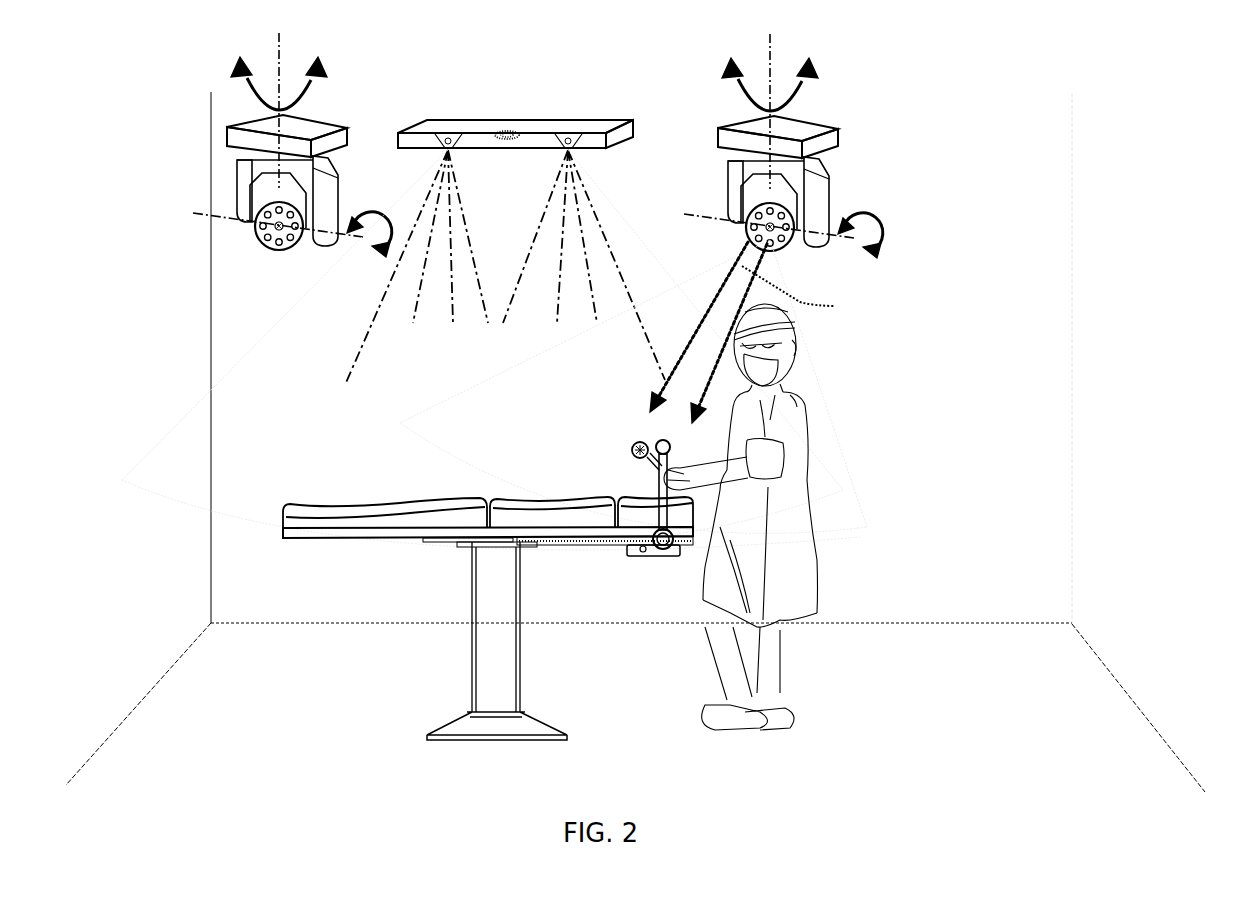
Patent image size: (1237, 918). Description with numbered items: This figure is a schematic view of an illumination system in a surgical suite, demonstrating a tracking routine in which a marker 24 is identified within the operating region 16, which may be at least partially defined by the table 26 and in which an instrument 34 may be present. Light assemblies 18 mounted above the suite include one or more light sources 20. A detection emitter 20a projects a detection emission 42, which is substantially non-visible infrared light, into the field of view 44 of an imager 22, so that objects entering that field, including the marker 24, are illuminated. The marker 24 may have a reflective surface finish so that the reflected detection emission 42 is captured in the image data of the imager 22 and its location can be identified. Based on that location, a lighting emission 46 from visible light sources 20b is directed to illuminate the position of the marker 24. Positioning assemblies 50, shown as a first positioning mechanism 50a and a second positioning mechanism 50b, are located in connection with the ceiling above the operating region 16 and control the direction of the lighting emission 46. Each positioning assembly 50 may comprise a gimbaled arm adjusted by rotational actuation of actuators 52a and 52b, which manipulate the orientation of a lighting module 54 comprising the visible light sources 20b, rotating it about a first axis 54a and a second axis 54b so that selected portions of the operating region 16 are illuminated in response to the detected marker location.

The operating region 16 is at (355, 447).
The light assembly 18 is at (276, 257).
The light source 20 is at (641, 134).
The detection emitter 20a is at (450, 136).
The visible light source 20b is at (278, 238).
The imager 22 is at (508, 130).
The marker 24 is at (635, 445).
The table 26 is at (430, 540).
The instrument 34 is at (648, 463).
The detection emission 42 is at (525, 257).
The field of view 44 is at (198, 405).
The lighting emission 46 is at (753, 332).
The positioning assembly 50 is at (527, 188).
The first positioning mechanism 50a is at (859, 148).
The second positioning mechanism 50b is at (207, 165).
The actuator 52a is at (258, 120).
The actuator 52b is at (245, 217).
The lighting module 54 is at (517, 188).
The first axis 54a is at (277, 52).
The second axis 54b is at (193, 216).